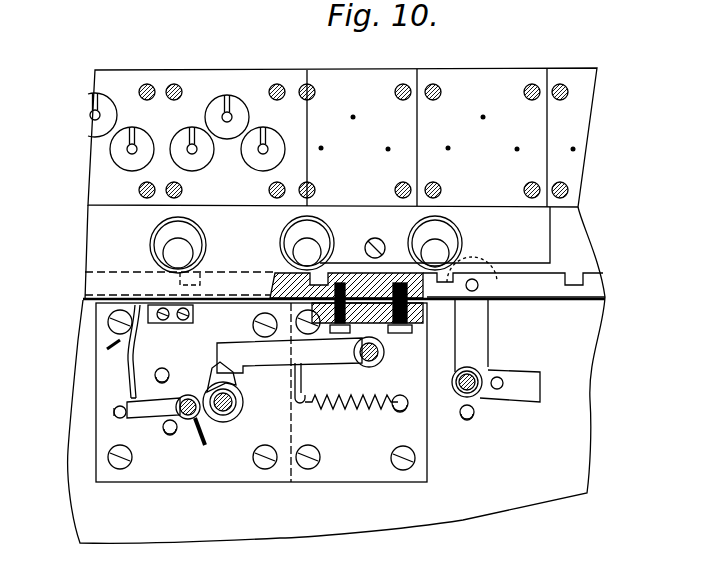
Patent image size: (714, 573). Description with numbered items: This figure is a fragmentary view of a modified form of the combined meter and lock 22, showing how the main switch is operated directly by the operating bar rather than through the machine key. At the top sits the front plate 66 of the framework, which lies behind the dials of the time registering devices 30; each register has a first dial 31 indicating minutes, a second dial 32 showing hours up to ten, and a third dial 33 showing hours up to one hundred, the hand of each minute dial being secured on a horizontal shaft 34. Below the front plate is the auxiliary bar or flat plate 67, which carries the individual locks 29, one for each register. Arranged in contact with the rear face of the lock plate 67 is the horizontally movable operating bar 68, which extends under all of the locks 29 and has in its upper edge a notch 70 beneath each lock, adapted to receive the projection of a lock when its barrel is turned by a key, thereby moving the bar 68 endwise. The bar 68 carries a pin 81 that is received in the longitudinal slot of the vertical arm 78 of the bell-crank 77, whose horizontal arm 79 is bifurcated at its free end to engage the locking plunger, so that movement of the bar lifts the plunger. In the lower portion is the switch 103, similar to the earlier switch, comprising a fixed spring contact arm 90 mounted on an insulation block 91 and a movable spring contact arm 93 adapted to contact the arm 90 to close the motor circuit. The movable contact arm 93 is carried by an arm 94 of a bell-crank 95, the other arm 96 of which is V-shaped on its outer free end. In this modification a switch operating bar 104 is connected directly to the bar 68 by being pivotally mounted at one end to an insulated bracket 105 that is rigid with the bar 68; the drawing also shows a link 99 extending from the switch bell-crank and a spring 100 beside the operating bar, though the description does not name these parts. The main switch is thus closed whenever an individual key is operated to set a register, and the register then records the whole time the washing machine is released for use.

The combined meter and lock 22 is at (598, 330).
The lock 29 is at (158, 238).
The time registering device 30 is at (210, 93).
The first dial 31 is at (192, 165).
The second dial 32 is at (112, 102).
The third dial 33 is at (120, 172).
The horizontal shaft 34 is at (321, 148).
The front plate 66 is at (85, 163).
The auxiliary bar or flat plate 67 is at (85, 253).
The operating bar 68 is at (352, 275).
The notch 70 is at (180, 280).
The bell-crank 77 is at (458, 407).
The vertical arm 78 is at (483, 337).
The horizontal arm 79 is at (530, 393).
The pin 81 is at (480, 285).
The fixed spring contact arm 90 is at (130, 357).
The insulation block 91 is at (193, 322).
The movable spring contact arm 93 is at (135, 385).
The arm 94 is at (188, 395).
The bell-crank 95 is at (214, 372).
The arm 96 is at (222, 375).
The arm 99 is at (238, 374).
The spring 100 is at (360, 412).
The switch 103 is at (289, 488).
The switch operating bar 104 is at (323, 358).
The insulated bracket 105 is at (397, 337).